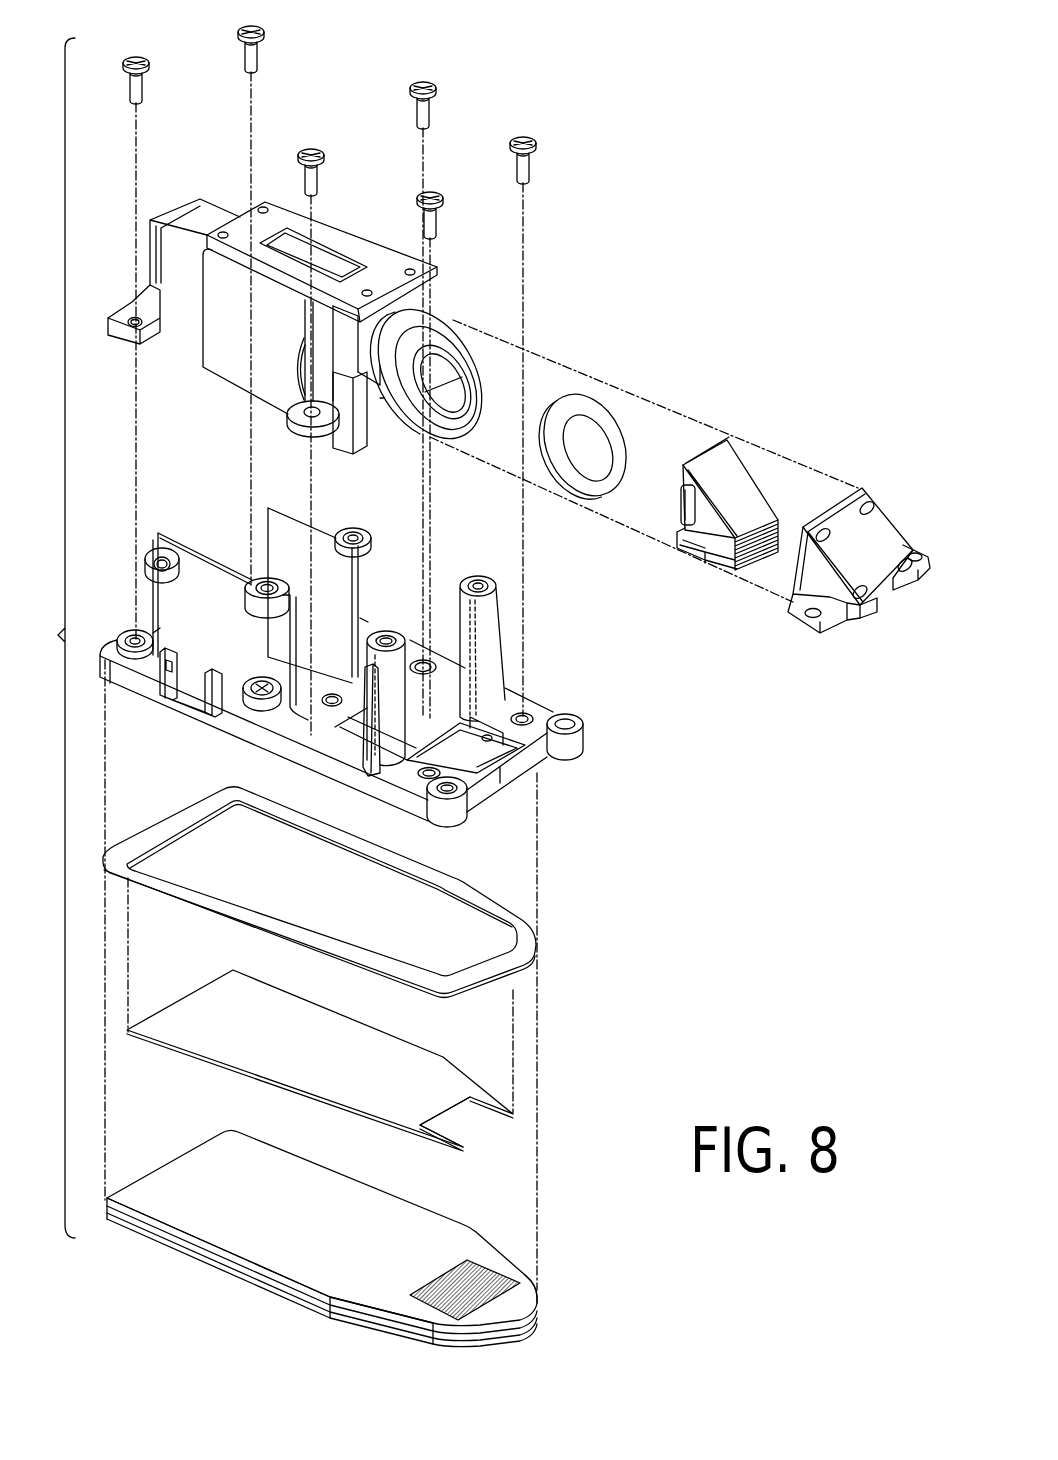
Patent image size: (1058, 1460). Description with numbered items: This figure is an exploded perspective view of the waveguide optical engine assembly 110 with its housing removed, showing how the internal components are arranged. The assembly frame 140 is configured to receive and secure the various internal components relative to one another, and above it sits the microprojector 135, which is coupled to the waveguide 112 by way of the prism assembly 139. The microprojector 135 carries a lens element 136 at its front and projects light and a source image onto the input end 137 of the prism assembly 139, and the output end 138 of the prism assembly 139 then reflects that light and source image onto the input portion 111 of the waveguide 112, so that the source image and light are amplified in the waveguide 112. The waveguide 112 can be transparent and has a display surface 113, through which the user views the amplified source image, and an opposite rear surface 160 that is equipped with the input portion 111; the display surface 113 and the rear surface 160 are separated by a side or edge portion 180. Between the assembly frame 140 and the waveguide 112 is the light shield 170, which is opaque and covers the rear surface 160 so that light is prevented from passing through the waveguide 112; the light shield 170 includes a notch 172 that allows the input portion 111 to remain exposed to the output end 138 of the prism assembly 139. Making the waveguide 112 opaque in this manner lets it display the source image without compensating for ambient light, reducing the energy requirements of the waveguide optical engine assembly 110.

The waveguide optical engine assembly 110 is at (46, 638).
The input portion 111 is at (500, 1270).
The waveguide 112 is at (550, 1311).
The display surface 113 is at (241, 1286).
The microprojector 135 is at (245, 348).
The lens 136 is at (440, 382).
The input end 137 is at (687, 449).
The output end 138 is at (710, 590).
The prism assembly 139 is at (933, 498).
The assembly frame 140 is at (541, 691).
The rear surface 160 is at (317, 1232).
The light shield 170 is at (394, 1067).
The notch 172 is at (480, 1130).
The side or edge portion 180 is at (484, 1333).